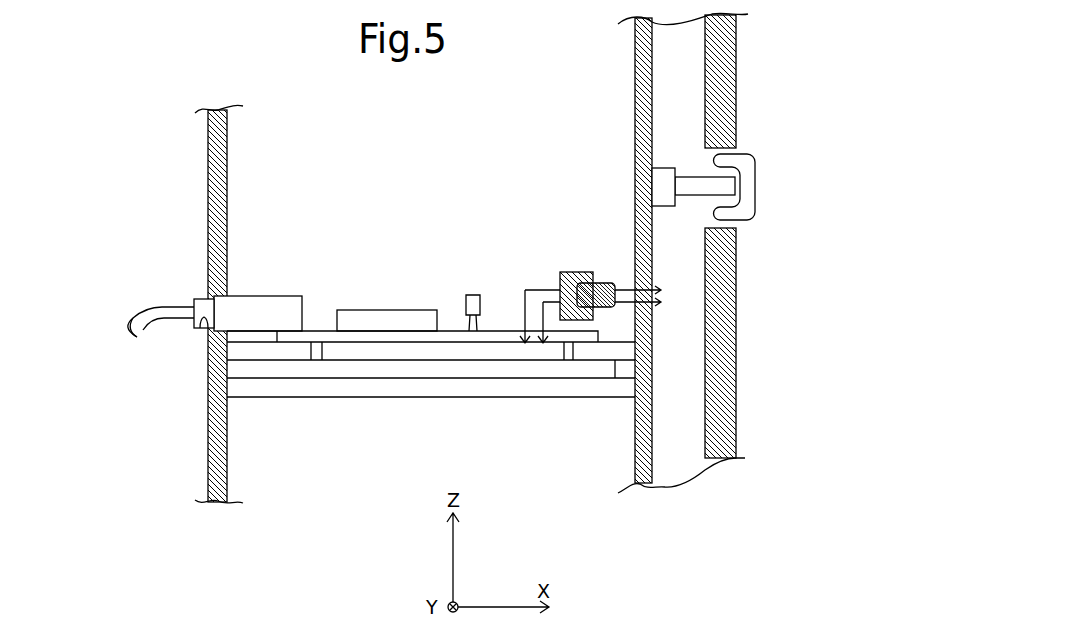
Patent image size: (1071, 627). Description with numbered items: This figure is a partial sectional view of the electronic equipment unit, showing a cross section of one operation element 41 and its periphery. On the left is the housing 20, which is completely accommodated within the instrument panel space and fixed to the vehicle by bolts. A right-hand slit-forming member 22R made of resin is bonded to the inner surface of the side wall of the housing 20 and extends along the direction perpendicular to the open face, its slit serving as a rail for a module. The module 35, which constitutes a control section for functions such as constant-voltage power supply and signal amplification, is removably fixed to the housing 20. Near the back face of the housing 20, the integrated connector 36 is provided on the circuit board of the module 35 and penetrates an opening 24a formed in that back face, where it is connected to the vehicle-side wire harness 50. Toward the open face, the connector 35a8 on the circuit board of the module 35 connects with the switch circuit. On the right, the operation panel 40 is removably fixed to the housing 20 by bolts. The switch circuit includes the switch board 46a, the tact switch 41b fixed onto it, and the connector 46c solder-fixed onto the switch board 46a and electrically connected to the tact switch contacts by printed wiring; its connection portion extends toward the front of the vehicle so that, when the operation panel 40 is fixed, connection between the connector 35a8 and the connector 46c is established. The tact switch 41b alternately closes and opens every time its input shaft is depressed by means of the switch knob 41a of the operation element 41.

The housing 20 is at (208, 214).
The integrated connector 36 is at (201, 299).
The vehicle-side wire harness 50 is at (154, 306).
The opening 24a is at (199, 331).
The right-hand slit-forming member 22R is at (325, 398).
The module 35 is at (364, 298).
The connector 35a8 is at (570, 272).
The connector 46c is at (605, 283).
The switch board 46a is at (635, 64).
The operation panel 40 is at (736, 48).
The operation element 41 is at (711, 167).
The switch knob 41a is at (755, 184).
The tact switch 41b is at (664, 168).